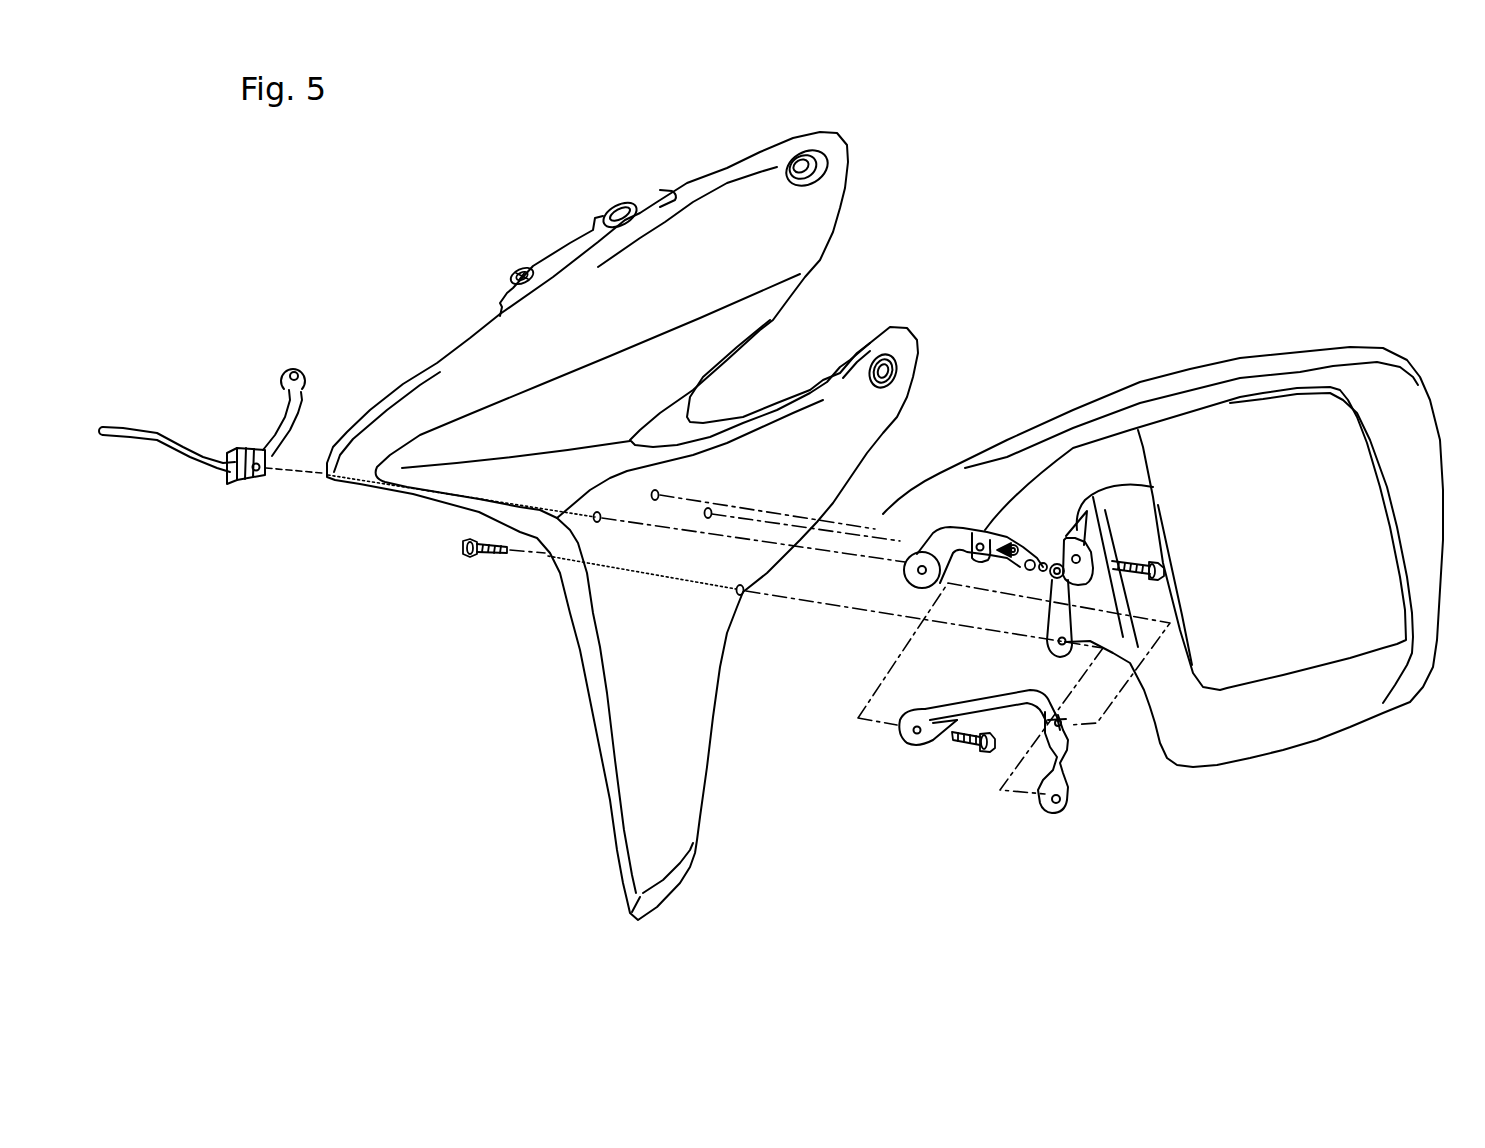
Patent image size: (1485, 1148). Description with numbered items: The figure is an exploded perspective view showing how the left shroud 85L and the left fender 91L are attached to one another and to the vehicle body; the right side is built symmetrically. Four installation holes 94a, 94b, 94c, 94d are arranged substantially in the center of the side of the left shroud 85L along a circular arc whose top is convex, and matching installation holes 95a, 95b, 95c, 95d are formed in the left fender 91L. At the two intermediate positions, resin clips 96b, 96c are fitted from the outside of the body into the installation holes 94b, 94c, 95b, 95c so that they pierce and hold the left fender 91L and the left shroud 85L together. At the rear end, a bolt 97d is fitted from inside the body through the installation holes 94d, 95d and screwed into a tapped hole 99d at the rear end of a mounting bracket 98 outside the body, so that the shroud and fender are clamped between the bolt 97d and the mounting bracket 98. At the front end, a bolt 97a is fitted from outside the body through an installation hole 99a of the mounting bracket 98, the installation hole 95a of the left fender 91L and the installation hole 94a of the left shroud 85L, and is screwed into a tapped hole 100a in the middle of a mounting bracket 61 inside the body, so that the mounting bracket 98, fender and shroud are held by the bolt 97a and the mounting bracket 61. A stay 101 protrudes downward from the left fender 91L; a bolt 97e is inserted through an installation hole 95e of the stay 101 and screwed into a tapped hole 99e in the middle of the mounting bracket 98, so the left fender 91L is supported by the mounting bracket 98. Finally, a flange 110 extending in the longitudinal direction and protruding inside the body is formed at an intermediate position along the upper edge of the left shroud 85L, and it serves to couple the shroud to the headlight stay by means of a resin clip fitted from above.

The left shroud 85L is at (860, 196).
The flange 110 is at (567, 253).
The mounting bracket 61 is at (159, 420).
The tapped hole 100a is at (262, 479).
The installation hole 94a is at (598, 512).
The installation hole 94b is at (657, 496).
The installation hole 94c is at (711, 512).
The installation hole 94d is at (743, 594).
The bolt 97d is at (463, 553).
The installation hole 95a is at (940, 533).
The installation hole 95b is at (985, 533).
The installation hole 95c is at (1062, 547).
The installation hole 95d is at (1062, 645).
The installation hole 95e is at (1082, 557).
The resin clip 96b is at (1050, 560).
The resin clip 96c is at (1087, 512).
The stay 101 is at (1153, 487).
The bolt 97e is at (1166, 573).
The left fender 91L is at (1432, 362).
The mounting bracket 98 is at (1062, 806).
The installation hole 99a is at (923, 745).
The tapped hole 99d is at (1067, 807).
The tapped hole 99e is at (1073, 733).
The bolt 97a is at (987, 750).